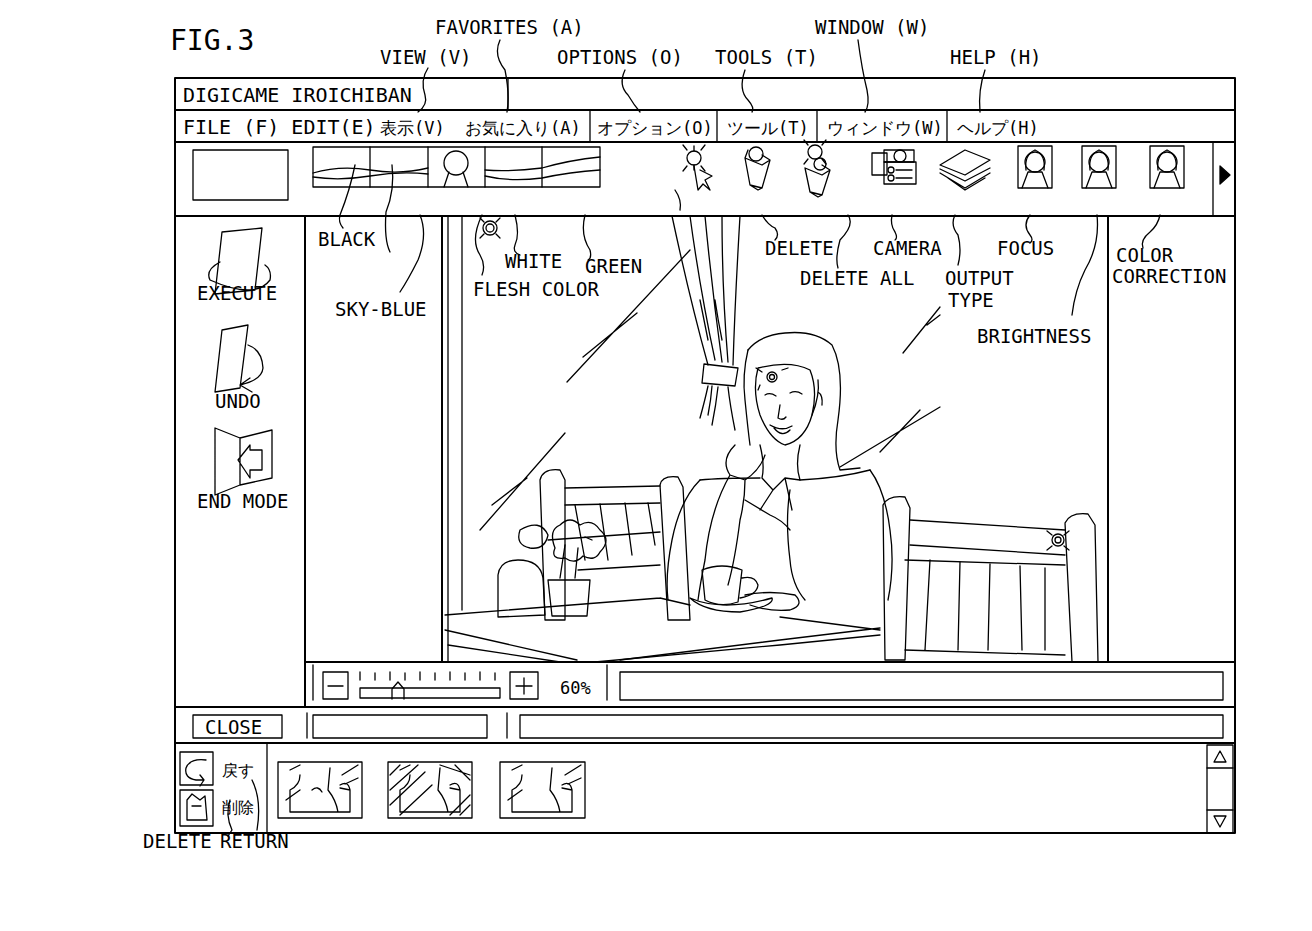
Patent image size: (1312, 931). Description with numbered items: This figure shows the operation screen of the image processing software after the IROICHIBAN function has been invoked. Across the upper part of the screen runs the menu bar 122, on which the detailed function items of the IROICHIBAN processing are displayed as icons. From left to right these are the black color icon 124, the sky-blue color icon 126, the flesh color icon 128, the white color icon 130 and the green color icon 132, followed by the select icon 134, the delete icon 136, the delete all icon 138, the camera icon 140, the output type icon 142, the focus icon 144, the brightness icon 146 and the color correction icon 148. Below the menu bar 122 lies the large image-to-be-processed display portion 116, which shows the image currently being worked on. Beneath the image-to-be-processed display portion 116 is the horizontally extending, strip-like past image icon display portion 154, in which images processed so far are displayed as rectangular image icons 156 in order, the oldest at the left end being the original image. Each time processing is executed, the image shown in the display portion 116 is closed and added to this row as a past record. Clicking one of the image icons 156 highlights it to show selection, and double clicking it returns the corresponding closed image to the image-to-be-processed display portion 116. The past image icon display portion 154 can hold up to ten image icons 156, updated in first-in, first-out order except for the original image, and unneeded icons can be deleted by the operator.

The image-to-be-processed display portion 116 is at (1215, 540).
The menu bar 122 is at (1205, 160).
The black color icon 124 is at (370, 267).
The sky-blue color icon 126 is at (400, 230).
The flesh color icon 128 is at (442, 155).
The white color icon 130 is at (530, 160).
The green color icon 132 is at (580, 150).
The select icon 134 is at (700, 152).
The delete icon 136 is at (752, 152).
The delete all icon 138 is at (813, 152).
The camera icon 140 is at (898, 155).
The output type icon 142 is at (955, 158).
The focus icon 144 is at (1048, 150).
The brightness icon 146 is at (1108, 150).
The color correction icon 148 is at (1170, 150).
The past image icon display portion 154 is at (1188, 788).
The image icon 156 is at (357, 792).